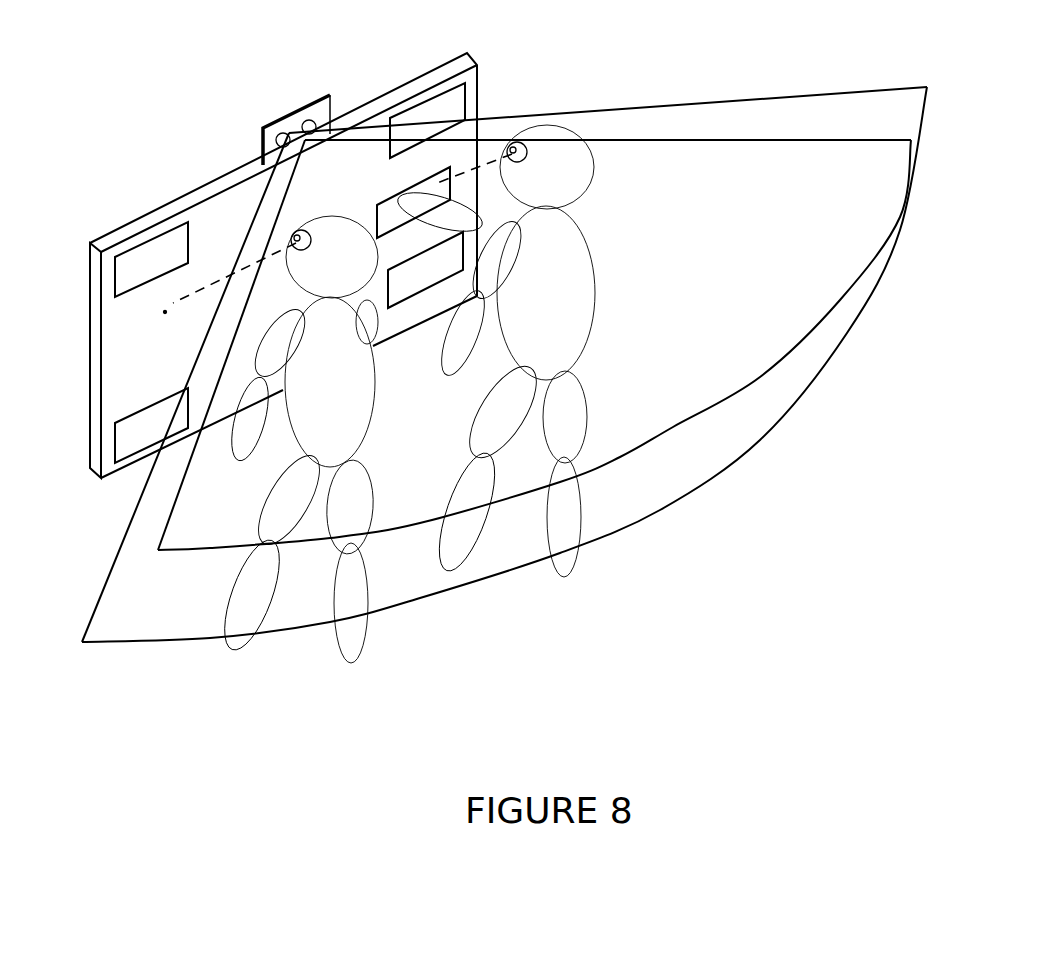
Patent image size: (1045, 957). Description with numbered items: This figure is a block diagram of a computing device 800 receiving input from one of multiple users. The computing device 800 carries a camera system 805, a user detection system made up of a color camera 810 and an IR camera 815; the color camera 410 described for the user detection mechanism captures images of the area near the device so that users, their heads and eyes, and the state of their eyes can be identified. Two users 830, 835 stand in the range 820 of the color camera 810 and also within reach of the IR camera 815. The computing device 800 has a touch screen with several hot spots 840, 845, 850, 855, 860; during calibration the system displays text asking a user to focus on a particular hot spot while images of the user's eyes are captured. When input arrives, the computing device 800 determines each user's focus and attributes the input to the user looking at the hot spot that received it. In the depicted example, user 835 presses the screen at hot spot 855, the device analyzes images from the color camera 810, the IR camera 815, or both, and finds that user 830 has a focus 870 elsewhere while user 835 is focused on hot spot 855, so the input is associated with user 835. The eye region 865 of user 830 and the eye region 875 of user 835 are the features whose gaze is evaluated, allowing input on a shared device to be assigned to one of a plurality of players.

The color camera 410 is at (905, 100).
The computing device 800 is at (185, 198).
The camera system 805 is at (291, 128).
The color camera 810 is at (278, 133).
The IR camera 815 is at (313, 122).
The range of the color camera 820 is at (106, 642).
The user 830 is at (238, 648).
The user 835 is at (567, 563).
The hot spot 840 is at (118, 262).
The hot spot 845 is at (102, 480).
The hot spot 850 is at (460, 90).
The hot spot 855 is at (390, 212).
The hot spot 860 is at (413, 283).
The eye of first user 865 is at (300, 237).
The focus 870 is at (175, 307).
The eye of second user 875 is at (520, 152).